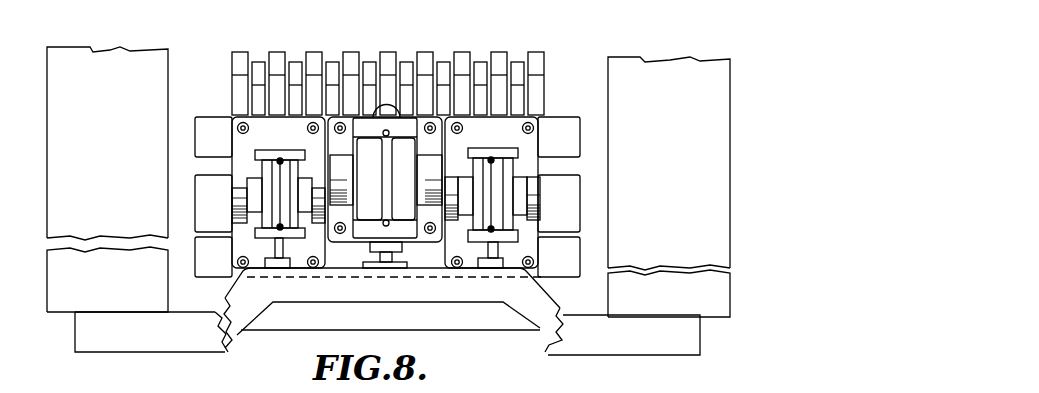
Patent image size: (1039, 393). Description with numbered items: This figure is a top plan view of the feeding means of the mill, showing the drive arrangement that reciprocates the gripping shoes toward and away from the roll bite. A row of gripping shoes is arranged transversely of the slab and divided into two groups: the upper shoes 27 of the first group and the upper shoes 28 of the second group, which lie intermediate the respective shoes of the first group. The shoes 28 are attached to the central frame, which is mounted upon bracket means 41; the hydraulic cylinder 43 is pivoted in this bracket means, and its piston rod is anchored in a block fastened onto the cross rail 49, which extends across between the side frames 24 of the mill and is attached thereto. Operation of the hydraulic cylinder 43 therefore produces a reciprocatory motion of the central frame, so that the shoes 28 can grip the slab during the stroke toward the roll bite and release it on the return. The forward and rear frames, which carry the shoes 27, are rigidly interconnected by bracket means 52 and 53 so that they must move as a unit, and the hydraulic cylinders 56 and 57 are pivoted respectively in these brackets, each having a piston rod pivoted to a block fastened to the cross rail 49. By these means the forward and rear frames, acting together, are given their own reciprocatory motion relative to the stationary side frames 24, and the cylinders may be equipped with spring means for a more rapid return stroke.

The side frames 24 is at (388, 182).
The upper shoes 27 is at (239, 52).
The upper shoes 28 is at (258, 62).
The bracket means 41 is at (405, 244).
The hydraulic cylinder 43 is at (385, 172).
The cross rail 49 is at (558, 358).
The bracket means 52 is at (552, 115).
The bracket means 53 is at (228, 130).
The hydraulic cylinder 56 is at (505, 148).
The hydraulic cylinder 57 is at (289, 135).